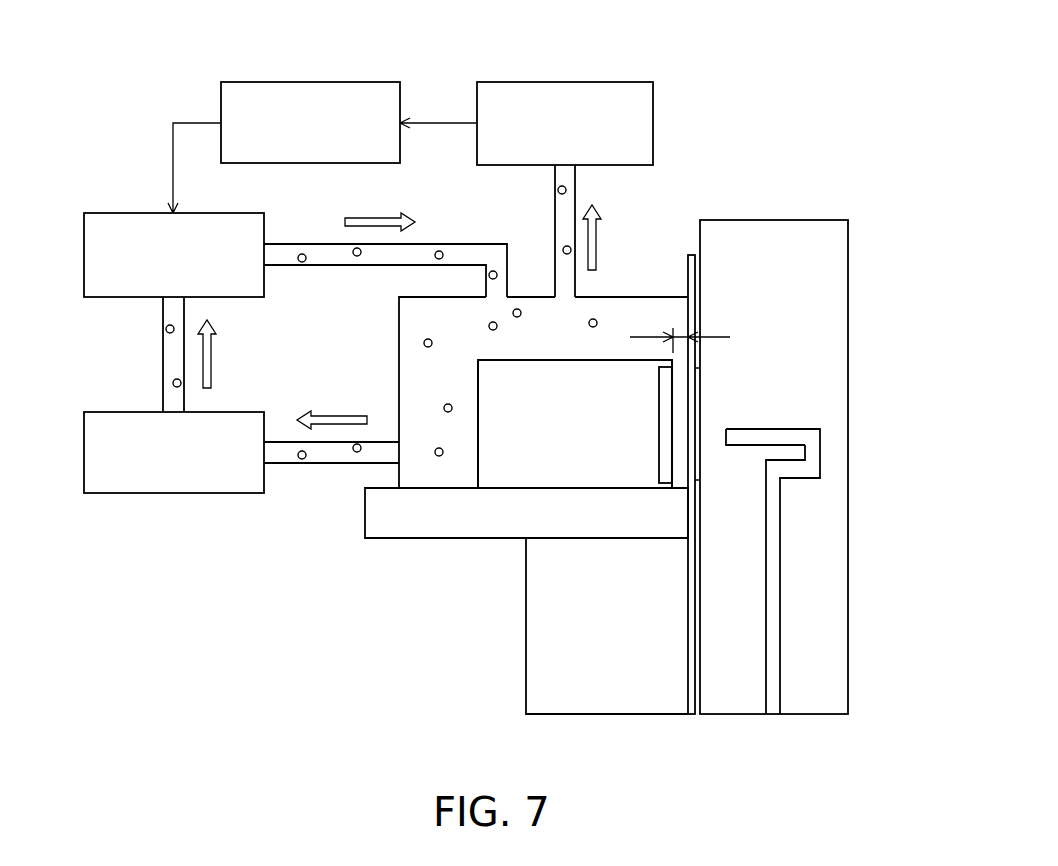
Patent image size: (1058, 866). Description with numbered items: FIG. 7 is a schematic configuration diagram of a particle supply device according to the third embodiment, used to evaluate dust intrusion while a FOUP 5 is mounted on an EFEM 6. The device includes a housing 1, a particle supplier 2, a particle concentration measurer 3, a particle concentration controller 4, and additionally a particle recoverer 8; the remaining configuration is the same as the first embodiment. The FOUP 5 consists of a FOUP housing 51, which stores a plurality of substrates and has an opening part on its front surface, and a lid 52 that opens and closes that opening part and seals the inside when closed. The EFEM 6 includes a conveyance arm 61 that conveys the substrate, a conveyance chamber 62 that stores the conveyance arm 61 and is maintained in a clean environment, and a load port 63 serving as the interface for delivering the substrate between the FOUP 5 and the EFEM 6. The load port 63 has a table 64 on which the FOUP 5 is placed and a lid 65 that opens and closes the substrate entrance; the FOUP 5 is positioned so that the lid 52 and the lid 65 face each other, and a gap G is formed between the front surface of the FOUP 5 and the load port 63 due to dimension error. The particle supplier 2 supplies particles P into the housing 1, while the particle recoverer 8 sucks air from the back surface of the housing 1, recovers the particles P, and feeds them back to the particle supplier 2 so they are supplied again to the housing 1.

The housing 1 is at (413, 378).
The particle supplier 2 is at (128, 213).
The particle concentration measurer 3 is at (520, 82).
The particle concentration controller 4 is at (264, 82).
The FOUP 5 is at (577, 493).
The EFEM 6 is at (780, 427).
The particle recoverer 8 is at (127, 412).
The FOUP housing 51 is at (505, 465).
The lid 52 is at (664, 422).
The conveyance arm 61 is at (812, 438).
The conveyance chamber 62 is at (850, 355).
The load port 63 is at (690, 270).
The table 64 is at (440, 528).
The lid 65 is at (697, 410).
The particle P is at (440, 252).
The gap G is at (680, 327).